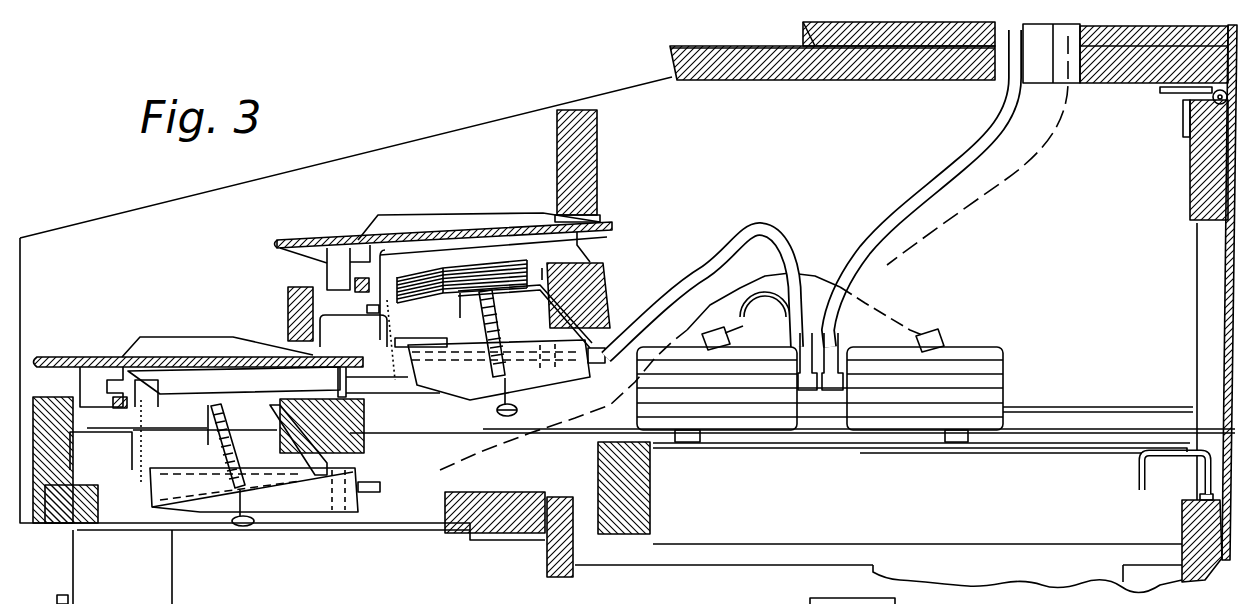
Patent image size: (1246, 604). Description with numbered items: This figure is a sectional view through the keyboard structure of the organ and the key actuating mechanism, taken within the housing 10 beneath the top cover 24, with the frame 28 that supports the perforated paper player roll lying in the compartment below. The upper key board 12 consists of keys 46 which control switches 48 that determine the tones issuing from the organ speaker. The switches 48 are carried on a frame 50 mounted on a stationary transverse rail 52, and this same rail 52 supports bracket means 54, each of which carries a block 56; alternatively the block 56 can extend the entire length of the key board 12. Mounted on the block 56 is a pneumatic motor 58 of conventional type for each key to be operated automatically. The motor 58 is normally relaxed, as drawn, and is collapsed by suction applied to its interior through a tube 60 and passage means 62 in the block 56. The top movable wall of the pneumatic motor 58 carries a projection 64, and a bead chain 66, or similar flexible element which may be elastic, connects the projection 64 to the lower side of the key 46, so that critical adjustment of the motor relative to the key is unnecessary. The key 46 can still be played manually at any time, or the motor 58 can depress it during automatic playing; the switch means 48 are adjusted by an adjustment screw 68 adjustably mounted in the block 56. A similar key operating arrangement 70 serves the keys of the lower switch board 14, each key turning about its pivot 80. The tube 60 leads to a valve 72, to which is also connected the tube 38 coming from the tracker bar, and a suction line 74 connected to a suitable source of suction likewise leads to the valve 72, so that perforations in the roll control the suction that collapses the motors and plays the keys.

The housing 10 is at (670, 62).
The top cover 24 is at (803, 24).
The upper key board 12 is at (494, 186).
The lower switch board 14 is at (219, 322).
The key 46 is at (340, 240).
The switch 48 is at (424, 255).
The frame 50 is at (525, 294).
The stationary transverse rail 52 is at (605, 272).
The bracket means 54 is at (610, 302).
The block 56 is at (468, 402).
The pneumatic motor 58 is at (420, 385).
The tube 60 is at (710, 250).
The passage means 62 is at (580, 362).
The projection 64 is at (424, 340).
The bead chain 66 is at (387, 330).
The adjustment screw 68 is at (495, 315).
The key operating arrangement 70 is at (191, 520).
The valve 72 is at (743, 367).
The suction line 74 is at (767, 292).
The tube 38 is at (858, 214).
The pivot 80 is at (495, 546).
The frame 28 is at (596, 523).